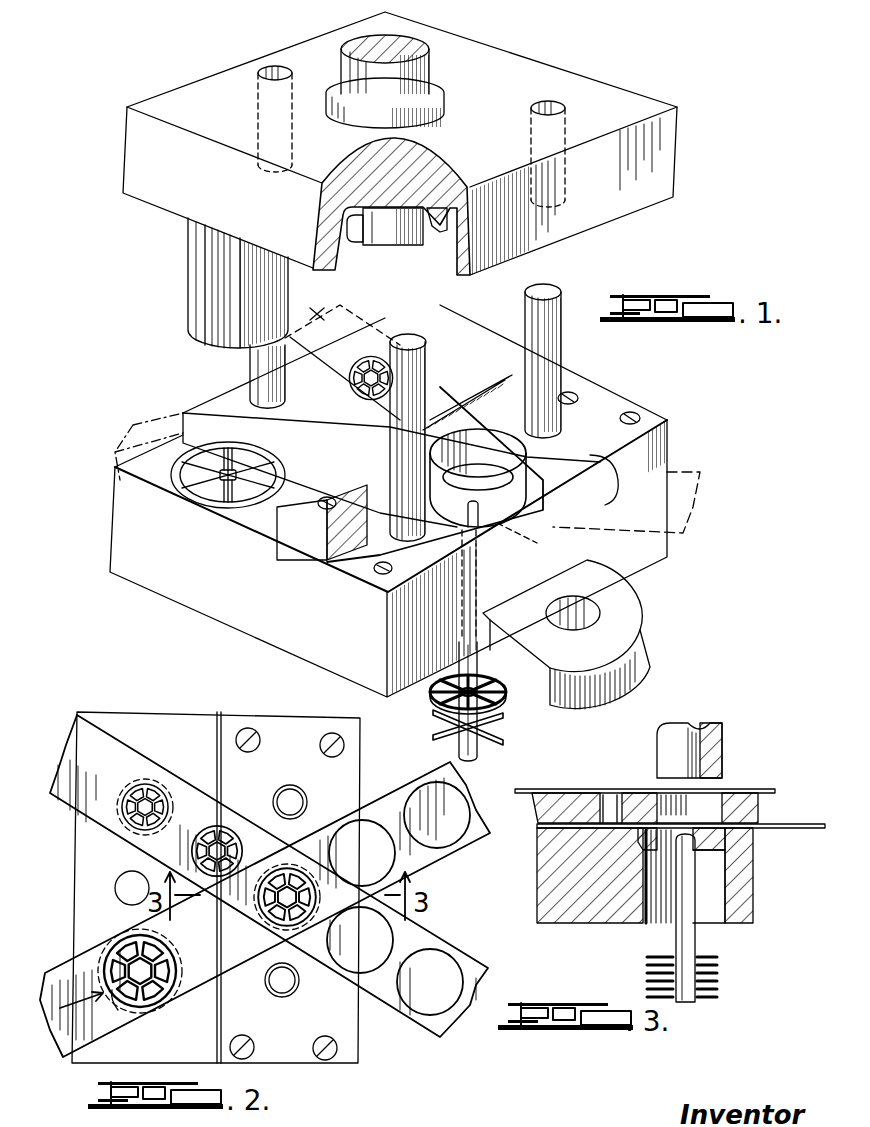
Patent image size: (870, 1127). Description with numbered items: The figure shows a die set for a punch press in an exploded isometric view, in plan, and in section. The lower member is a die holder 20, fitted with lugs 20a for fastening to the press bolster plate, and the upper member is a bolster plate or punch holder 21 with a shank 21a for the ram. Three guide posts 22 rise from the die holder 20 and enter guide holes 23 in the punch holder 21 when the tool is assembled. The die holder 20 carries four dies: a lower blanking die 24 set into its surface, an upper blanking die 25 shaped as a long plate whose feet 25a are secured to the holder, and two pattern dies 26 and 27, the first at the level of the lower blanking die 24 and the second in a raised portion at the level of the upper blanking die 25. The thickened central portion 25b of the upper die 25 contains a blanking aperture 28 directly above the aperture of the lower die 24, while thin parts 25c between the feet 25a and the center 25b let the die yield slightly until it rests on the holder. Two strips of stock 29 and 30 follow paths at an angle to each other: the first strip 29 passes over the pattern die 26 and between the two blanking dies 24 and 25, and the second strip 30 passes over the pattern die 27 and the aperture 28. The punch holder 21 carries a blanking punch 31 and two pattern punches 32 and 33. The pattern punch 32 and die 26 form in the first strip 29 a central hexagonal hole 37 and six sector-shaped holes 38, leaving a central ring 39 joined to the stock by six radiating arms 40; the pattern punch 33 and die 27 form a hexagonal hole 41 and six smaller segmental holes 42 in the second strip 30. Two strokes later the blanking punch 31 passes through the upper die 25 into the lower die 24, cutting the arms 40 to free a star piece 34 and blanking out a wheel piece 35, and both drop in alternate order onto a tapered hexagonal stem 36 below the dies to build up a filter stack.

In FIG. 1, the die holder 20 is at (112, 530).
In FIG. 2, the die holder 20 is at (175, 720).
In FIG. 3, the die holder 20 is at (742, 900).
In FIG. 1, the lugs 20a is at (620, 611).
In FIG. 1, the upper bolster plate or punch holder 21 is at (668, 168).
In FIG. 1, the shank 21a is at (430, 86).
In FIG. 1, the guide posts 22 is at (260, 363).
In FIG. 2, the guide posts 22 is at (130, 875).
In FIG. 1, the guide holes 23 is at (262, 70).
In FIG. 1, the lower blanking die 24 is at (462, 540).
In FIG. 3, the lower blanking die 24 is at (742, 856).
In FIG. 1, the upper blanking die 25 is at (598, 413).
In FIG. 3, the upper blanking die 25 is at (738, 788).
In FIG. 1, the feet 25a is at (670, 446).
In FIG. 1, the central portion 25b is at (556, 515).
In FIG. 1, the thin parts 25c is at (615, 452).
In FIG. 1, the pattern die 26 is at (225, 492).
In FIG. 1, the pattern die 27 is at (348, 380).
In FIG. 1, the blanking aperture 28 is at (515, 456).
In FIG. 1, the strip of stock 29 is at (133, 424).
In FIG. 2, the strip of stock 29 is at (62, 975).
In FIG. 3, the strip of stock 29 is at (778, 830).
In FIG. 1, the strip of stock 30 is at (346, 310).
In FIG. 2, the strip of stock 30 is at (77, 716).
In FIG. 3, the strip of stock 30 is at (628, 788).
In FIG. 1, the blanking punch 31 is at (520, 275).
In FIG. 3, the blanking punch 31 is at (722, 740).
In FIG. 1, the pattern punch 32 is at (200, 293).
In FIG. 1, the pattern punch 33 is at (380, 238).
In FIG. 1, the spider or star piece 34 is at (505, 727).
In FIG. 3, the spider or star piece 34 is at (718, 980).
In FIG. 3, the wheel piece 35 is at (650, 975).
In FIG. 1, the hexagonal stem 36 is at (490, 752).
In FIG. 3, the hexagonal stem 36 is at (676, 937).
In FIG. 2, the central hexagonal hole 37 is at (135, 976).
In FIG. 2, the sector holes 38 is at (290, 876).
In FIG. 2, the central ring 39 is at (118, 1010).
In FIG. 2, the radiating arms 40 is at (112, 1012).
In FIG. 2, the hexagonal hole 41 is at (160, 790).
In FIG. 2, the segmental holes 42 is at (111, 778).